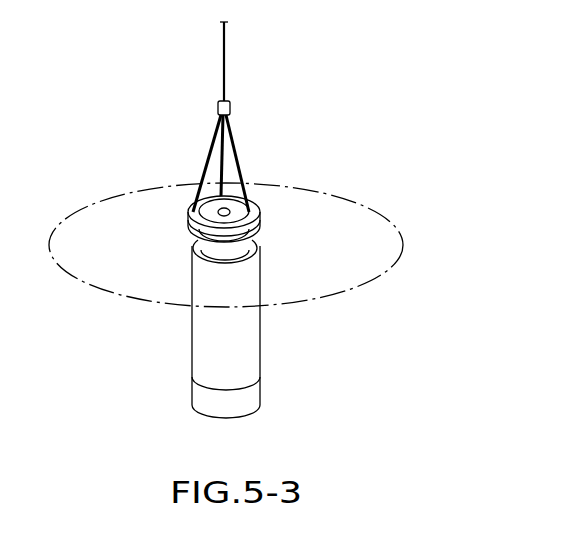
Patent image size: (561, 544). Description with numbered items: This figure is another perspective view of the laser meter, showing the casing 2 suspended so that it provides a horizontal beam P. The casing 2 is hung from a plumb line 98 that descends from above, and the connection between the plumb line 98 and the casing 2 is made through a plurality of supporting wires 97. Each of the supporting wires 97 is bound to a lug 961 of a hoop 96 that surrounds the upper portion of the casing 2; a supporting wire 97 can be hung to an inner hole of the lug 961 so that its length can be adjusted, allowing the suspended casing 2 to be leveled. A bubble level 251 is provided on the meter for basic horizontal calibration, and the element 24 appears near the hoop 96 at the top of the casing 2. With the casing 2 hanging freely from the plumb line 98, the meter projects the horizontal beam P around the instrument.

The casing 2 is at (238, 322).
The lower ring 24 is at (200, 262).
The hoop 96 is at (258, 249).
The lug 961 is at (189, 226).
The bubble level 251 is at (220, 210).
The supporting wires 97 is at (237, 145).
The plumb line 98 is at (227, 68).
The horizontal beam P is at (350, 200).